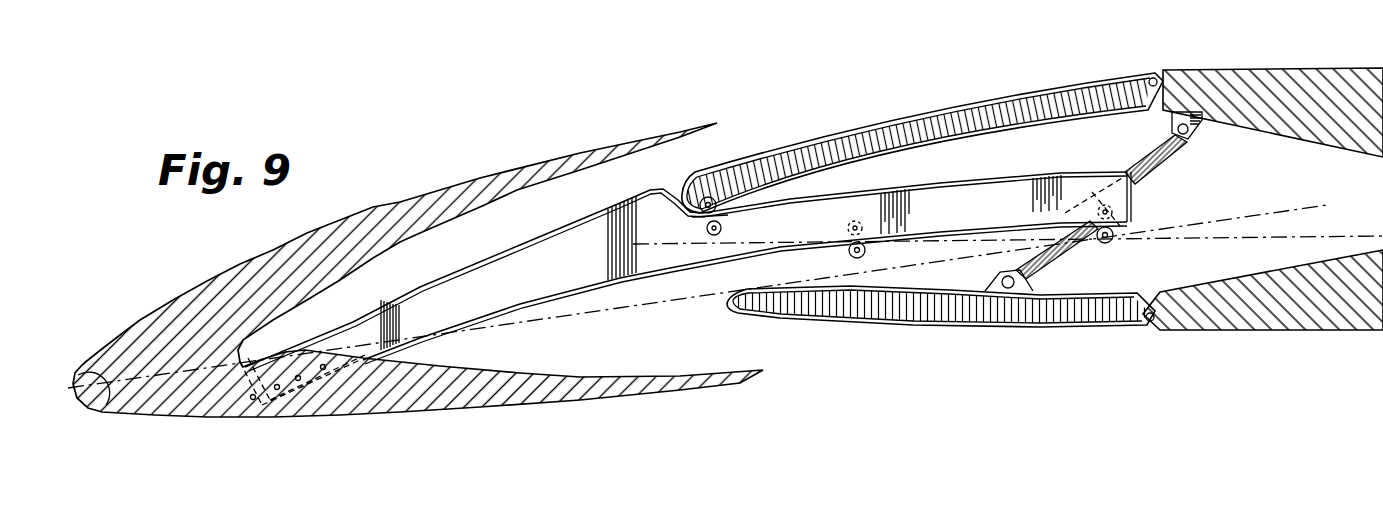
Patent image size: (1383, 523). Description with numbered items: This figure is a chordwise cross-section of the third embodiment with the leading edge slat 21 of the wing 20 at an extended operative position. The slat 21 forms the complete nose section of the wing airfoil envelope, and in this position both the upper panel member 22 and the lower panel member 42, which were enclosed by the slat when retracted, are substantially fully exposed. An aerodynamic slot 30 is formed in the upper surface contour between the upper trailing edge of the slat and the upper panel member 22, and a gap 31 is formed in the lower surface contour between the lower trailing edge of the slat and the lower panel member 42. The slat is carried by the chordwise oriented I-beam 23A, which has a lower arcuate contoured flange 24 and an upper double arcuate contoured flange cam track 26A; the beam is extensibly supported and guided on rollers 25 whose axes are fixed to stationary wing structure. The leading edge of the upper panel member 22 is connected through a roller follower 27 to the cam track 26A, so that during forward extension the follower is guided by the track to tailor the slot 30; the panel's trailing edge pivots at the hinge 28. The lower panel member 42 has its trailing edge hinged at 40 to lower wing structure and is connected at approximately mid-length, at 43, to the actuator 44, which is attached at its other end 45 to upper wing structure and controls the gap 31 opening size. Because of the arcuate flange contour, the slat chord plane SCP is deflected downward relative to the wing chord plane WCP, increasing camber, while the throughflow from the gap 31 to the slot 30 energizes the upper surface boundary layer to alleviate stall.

The wing 20 is at (1233, 69).
The leading edge slat 21 is at (222, 273).
The upper panel member 22 is at (905, 130).
The I-beam 23A is at (585, 279).
The lower arcuate contoured flange 24 is at (452, 333).
The rollers 25 is at (848, 250).
The upper flange cam track 26A is at (443, 269).
The roller follower 27 is at (707, 226).
The upper panel hinge 28 is at (1152, 78).
The aerodynamic slot 30 is at (745, 135).
The gap 31 is at (775, 350).
The hinge 40 is at (1150, 322).
The lower panel member 42 is at (870, 325).
The actuator connection 43 is at (1000, 283).
The actuator 44 is at (1160, 170).
The actuator attachment 45 is at (1193, 142).
The slat chord plane SCP is at (105, 408).
The wing chord plane WCP is at (650, 243).